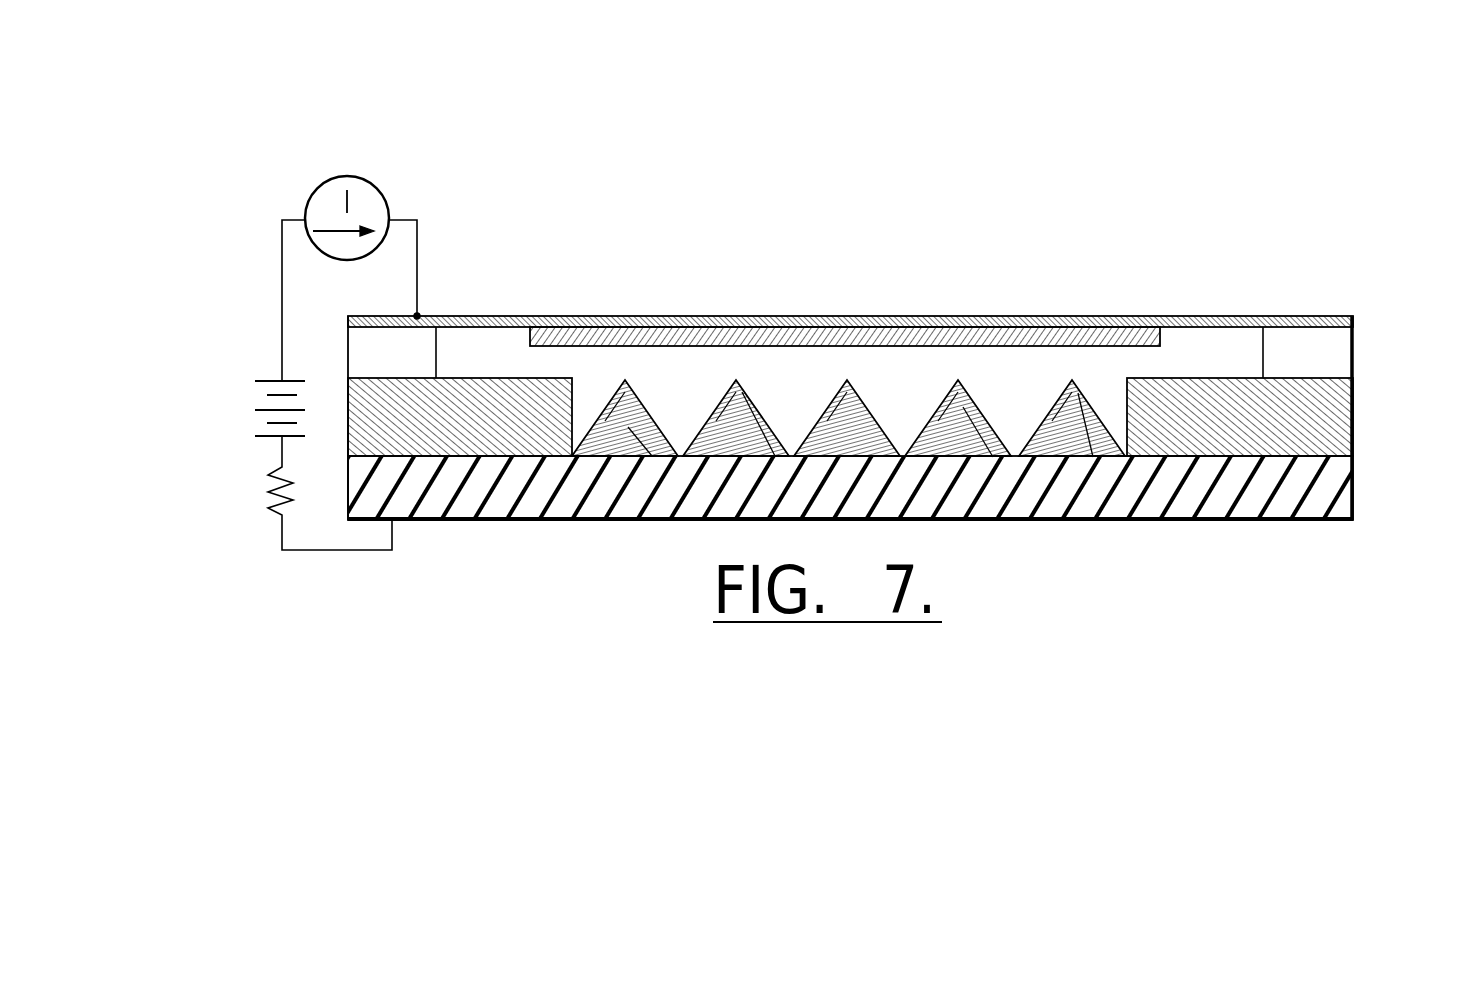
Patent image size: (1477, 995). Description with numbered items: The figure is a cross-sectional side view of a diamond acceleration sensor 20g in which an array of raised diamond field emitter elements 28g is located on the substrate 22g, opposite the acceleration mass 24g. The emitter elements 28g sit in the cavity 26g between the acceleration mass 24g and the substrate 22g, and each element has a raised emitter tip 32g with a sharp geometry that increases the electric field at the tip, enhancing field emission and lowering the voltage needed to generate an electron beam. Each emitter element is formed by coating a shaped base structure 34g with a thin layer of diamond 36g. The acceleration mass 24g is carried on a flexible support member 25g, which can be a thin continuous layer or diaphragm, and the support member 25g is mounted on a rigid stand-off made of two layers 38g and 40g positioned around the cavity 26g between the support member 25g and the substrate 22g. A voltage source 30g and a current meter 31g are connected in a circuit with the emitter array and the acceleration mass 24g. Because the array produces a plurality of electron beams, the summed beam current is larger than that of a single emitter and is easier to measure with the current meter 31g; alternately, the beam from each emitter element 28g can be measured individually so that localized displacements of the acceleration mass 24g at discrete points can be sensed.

The acceleration sensor 20g is at (574, 200).
The substrate 22g is at (1337, 510).
The acceleration mass 24g is at (723, 327).
The flexible support member 25g is at (479, 257).
The cavity 26g is at (997, 287).
The diamond field emitter elements 28g is at (708, 417).
The voltage source 30g is at (258, 393).
The current meter 31g is at (317, 185).
The emitter tip 32g is at (625, 380).
The base structure 34g is at (652, 457).
The thin layer of diamond 36g is at (834, 481).
The stand-off layer 38g is at (1337, 357).
The stand-off layer 40g is at (1337, 443).